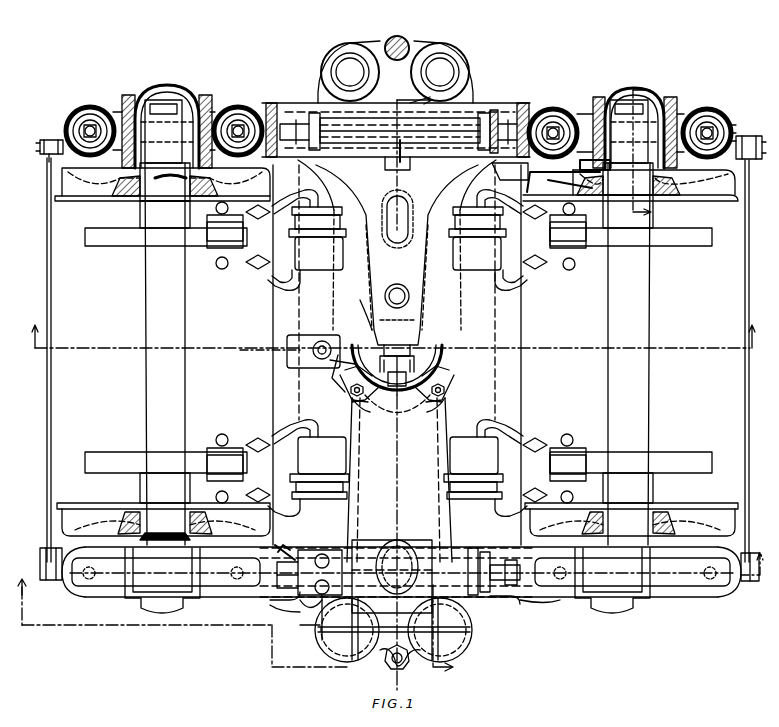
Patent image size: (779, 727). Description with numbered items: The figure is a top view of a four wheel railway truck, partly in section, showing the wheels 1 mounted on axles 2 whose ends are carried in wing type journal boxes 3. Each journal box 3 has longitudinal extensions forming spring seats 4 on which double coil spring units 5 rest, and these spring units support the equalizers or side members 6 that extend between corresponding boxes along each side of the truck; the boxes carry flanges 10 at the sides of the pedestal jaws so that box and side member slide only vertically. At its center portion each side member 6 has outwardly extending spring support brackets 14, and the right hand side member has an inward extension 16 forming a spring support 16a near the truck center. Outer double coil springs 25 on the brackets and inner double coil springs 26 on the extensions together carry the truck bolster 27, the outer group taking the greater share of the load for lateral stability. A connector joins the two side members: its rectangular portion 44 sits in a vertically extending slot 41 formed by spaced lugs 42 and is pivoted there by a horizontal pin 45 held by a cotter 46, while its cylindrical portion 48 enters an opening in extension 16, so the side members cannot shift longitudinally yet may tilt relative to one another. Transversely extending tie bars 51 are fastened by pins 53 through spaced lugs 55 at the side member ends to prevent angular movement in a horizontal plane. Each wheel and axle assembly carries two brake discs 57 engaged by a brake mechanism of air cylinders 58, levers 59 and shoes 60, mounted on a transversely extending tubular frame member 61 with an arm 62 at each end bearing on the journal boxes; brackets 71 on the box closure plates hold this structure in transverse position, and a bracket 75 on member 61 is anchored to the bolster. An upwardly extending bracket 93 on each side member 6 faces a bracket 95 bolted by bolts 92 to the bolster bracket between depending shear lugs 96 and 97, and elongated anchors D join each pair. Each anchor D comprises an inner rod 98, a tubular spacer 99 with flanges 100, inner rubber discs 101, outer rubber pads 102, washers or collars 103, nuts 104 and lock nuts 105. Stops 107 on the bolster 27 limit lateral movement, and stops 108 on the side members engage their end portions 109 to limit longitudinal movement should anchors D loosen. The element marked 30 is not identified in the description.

The wheels 1 is at (80, 203).
The axles 2 is at (668, 410).
The journal boxes 3 is at (196, 93).
The spring seats 4 is at (390, 615).
The double coil spring units 5 is at (66, 126).
The side members 6 is at (291, 104).
The flanges 10 is at (112, 554).
The spring support brackets 14 is at (470, 72).
The inward extension 16 is at (420, 280).
The spring support 16a is at (415, 300).
The double coil springs 25 is at (465, 645).
The double coil springs 26 is at (369, 452).
The truck bolster 27 is at (408, 542).
The bracket plate 30 is at (340, 368).
The vertically extending slot 41 is at (420, 360).
The spaced lugs 42 is at (447, 387).
The rectangular portion 44 is at (418, 340).
The horizontal pin 45 is at (440, 368).
The cotter 46 is at (364, 345).
The cylindrical portion 48 is at (353, 308).
The tie bars 51 is at (52, 387).
The pins 53 is at (40, 147).
The spaced lugs 55 is at (47, 158).
The brake discs 57 is at (120, 246).
The air cylinders 58 is at (397, 353).
The levers 59 is at (278, 280).
The shoes 60 is at (204, 258).
The tubular frame member 61 is at (270, 334).
The arm 62 is at (230, 528).
The brackets 71 is at (578, 170).
The bracket 75 is at (310, 336).
The bolts 92 is at (320, 582).
The bracket 93 is at (303, 108).
The bracket 95 is at (548, 108).
The shear lug 96 is at (278, 590).
The shear lug 97 is at (322, 622).
The inner rod 98 is at (403, 155).
The tubular spacer 99 is at (394, 160).
The flanges 100 is at (390, 136).
The inner rubber discs 101 is at (396, 130).
The rubber pads 102 is at (548, 100).
The washers or collars 103 is at (264, 100).
The nuts 104 is at (542, 116).
The lock nuts 105 is at (510, 172).
The stops 107 is at (360, 540).
The stops 108 is at (440, 520).
The end portions 109 is at (440, 540).
The elongated anchors D is at (379, 118).